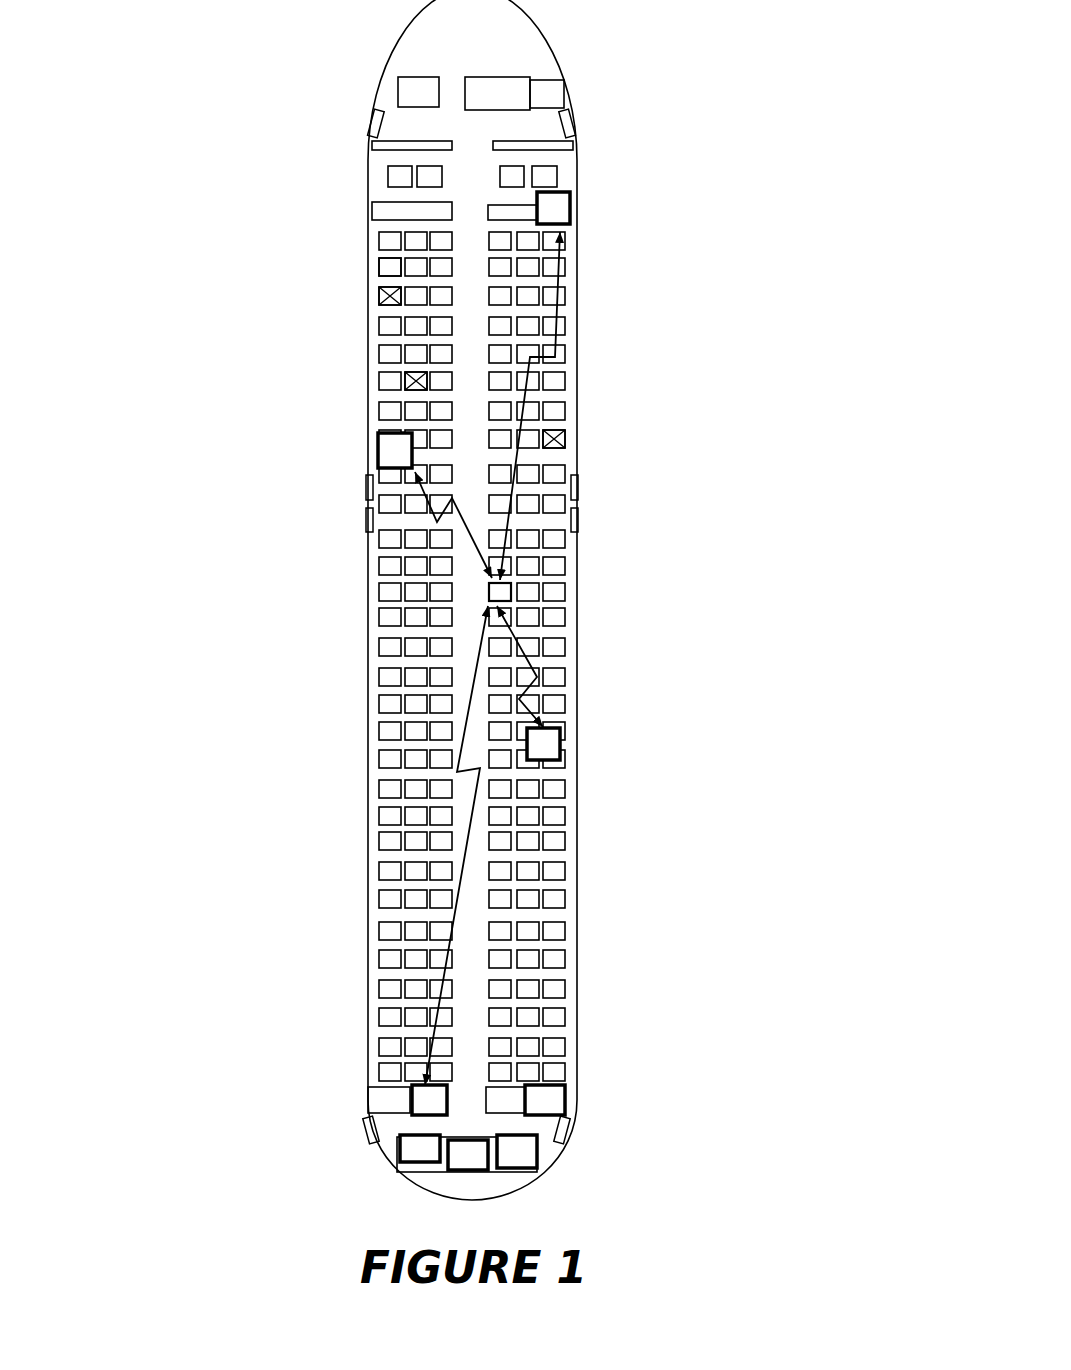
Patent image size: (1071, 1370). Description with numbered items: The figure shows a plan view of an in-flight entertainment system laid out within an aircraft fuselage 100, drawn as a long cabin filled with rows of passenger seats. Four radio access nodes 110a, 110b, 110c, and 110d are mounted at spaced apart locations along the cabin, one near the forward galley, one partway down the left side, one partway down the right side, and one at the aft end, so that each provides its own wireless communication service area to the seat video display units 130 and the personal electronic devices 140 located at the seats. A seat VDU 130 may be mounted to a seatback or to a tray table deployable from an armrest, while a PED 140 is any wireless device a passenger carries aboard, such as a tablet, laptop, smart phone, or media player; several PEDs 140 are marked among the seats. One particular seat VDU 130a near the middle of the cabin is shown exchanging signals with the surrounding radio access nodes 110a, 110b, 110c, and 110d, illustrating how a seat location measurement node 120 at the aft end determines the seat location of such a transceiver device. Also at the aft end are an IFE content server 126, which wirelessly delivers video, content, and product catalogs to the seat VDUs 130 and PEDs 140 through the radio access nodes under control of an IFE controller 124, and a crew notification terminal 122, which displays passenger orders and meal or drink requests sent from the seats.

The aircraft fuselage 100 is at (403, 48).
The radio access node 110a is at (570, 207).
The radio access node 110b is at (378, 450).
The radio access node 110c is at (560, 745).
The radio access node 110d is at (412, 1103).
The seat location measurement node 120 is at (565, 1095).
The crew notification terminal 122 is at (402, 1153).
The IFE controller 124 is at (477, 1170).
The IFE content server 126 is at (537, 1155).
The seat video display unit 130 is at (380, 263).
The seat video display unit 130a is at (511, 591).
The personal electronic device 140 is at (380, 292).